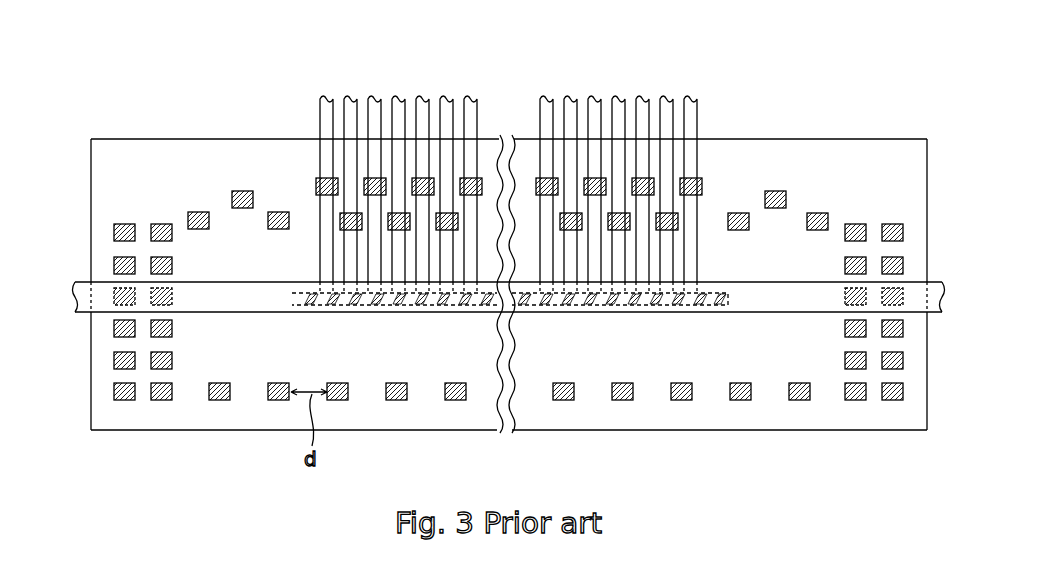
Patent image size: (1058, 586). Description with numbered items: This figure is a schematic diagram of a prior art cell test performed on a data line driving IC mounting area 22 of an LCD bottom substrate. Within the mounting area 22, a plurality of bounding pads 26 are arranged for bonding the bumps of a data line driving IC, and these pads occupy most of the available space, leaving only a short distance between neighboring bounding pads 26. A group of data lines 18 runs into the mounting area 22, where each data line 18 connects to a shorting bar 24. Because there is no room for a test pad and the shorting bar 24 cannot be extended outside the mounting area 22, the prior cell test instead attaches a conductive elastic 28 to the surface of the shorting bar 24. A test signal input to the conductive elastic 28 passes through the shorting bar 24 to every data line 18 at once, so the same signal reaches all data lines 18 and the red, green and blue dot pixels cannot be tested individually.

The data line 18 is at (326, 110).
The data line driving IC mounting area 22 is at (893, 137).
The shorting bar 24 is at (360, 302).
The bounding pad 26 is at (243, 195).
The conductive elastic 28 is at (76, 287).